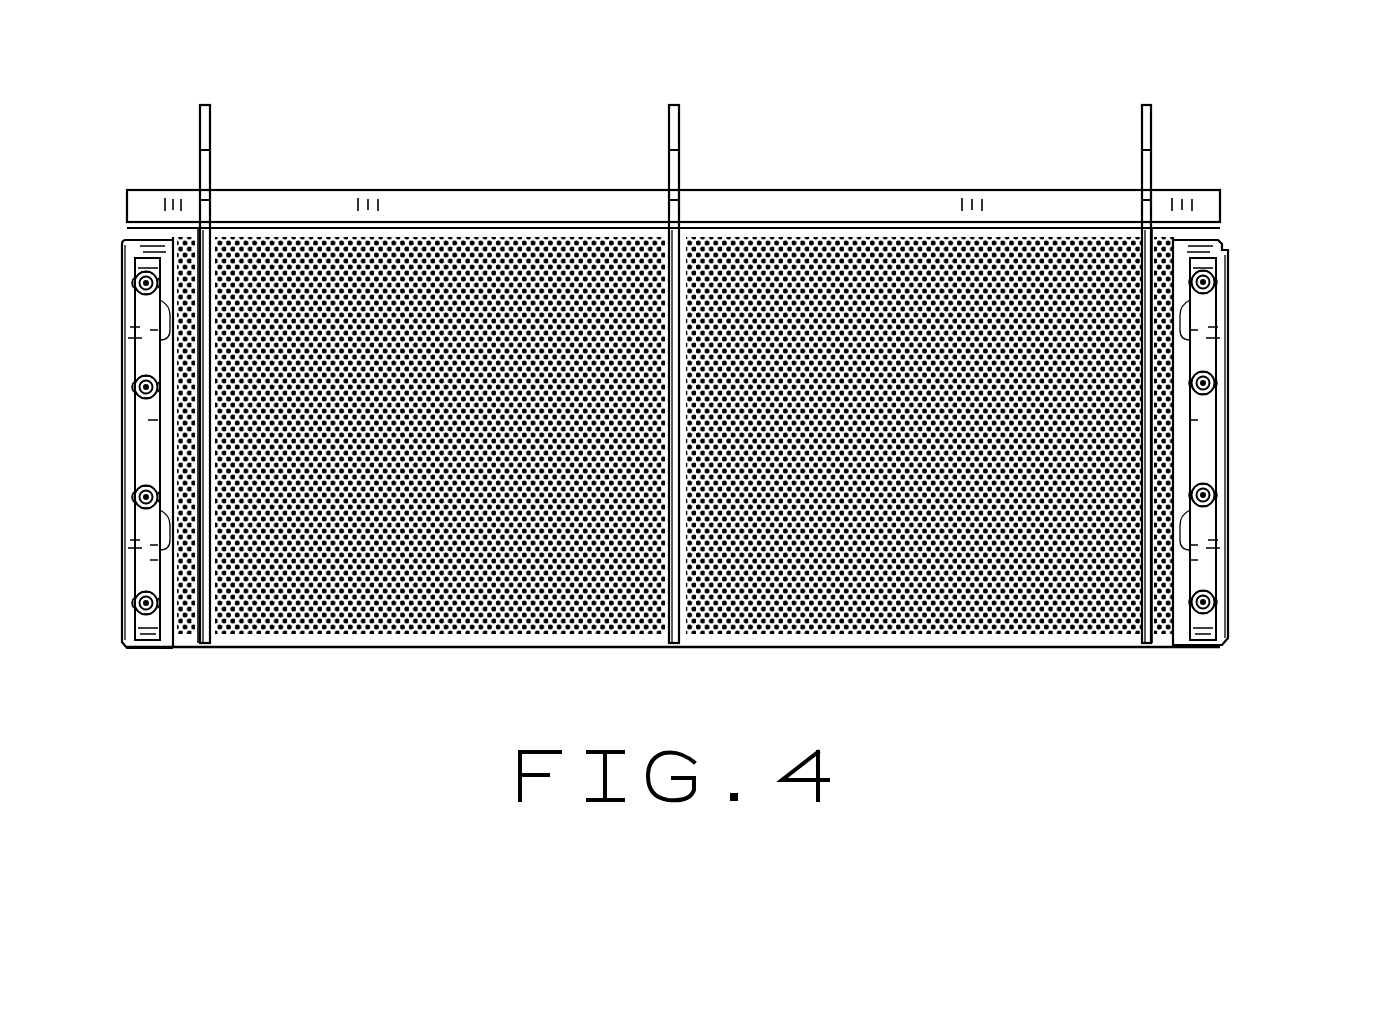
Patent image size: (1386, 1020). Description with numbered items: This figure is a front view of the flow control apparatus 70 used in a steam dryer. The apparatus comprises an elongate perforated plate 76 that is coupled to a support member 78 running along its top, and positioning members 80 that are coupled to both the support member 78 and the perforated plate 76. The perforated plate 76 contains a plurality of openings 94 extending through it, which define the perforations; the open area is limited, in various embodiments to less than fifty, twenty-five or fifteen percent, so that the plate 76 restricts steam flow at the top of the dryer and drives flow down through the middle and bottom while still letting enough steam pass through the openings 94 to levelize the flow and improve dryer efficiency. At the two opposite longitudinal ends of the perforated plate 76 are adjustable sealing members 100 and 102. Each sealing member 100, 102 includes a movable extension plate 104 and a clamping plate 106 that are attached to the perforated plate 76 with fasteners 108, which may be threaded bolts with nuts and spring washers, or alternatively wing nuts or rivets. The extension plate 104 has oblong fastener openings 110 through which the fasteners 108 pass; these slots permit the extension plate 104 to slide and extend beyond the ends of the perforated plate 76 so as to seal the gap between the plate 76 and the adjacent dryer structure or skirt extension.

The flow control apparatus 70 is at (866, 86).
The perforated plate 76 is at (282, 650).
The support member 78 is at (908, 190).
The positioning members 80 is at (674, 104).
The openings 94 is at (400, 634).
The adjustable sealing member 100 is at (1252, 258).
The adjustable sealing member 102 is at (100, 250).
The extension plate 104 is at (162, 630).
The clamping plate 106 is at (148, 565).
The fasteners 108 is at (140, 386).
The oblong fastener openings 110 is at (150, 320).